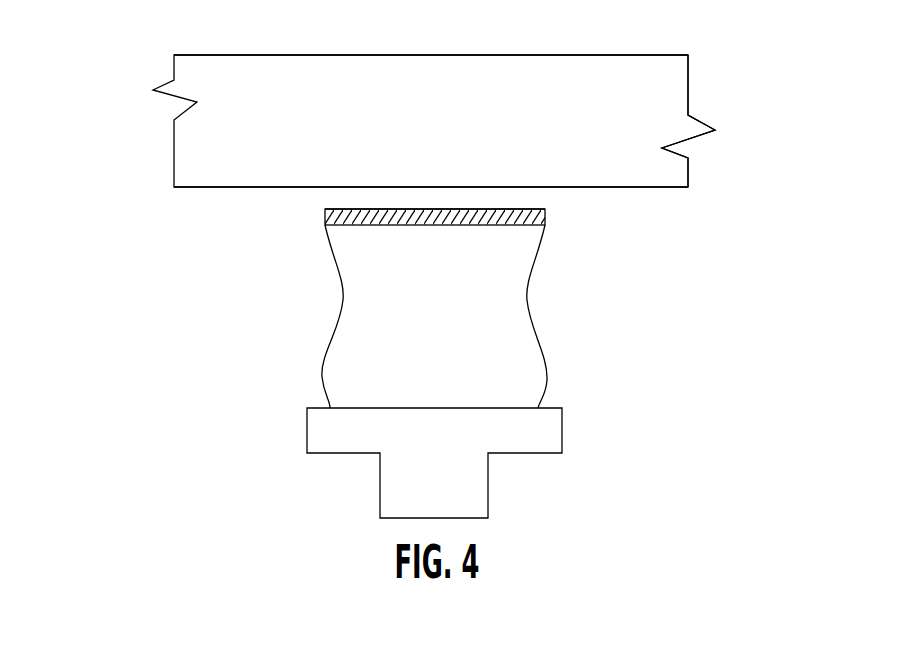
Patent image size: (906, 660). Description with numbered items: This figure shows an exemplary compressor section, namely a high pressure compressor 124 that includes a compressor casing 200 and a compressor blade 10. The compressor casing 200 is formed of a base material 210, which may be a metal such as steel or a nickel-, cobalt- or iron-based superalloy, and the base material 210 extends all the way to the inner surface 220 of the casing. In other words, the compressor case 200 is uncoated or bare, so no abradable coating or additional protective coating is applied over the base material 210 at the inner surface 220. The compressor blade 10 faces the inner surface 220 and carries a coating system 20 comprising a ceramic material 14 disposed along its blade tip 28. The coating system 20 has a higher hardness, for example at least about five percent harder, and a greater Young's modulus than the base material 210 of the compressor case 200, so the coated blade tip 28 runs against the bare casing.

The compressor blade 10 is at (638, 378).
The ceramic material 14 is at (545, 212).
The coating system 20 is at (569, 208).
The blade tip 28 is at (312, 225).
The high pressure compressor 124 is at (98, 150).
The compressor casing 200 is at (688, 92).
The base material 210 is at (642, 158).
The inner surface 220 is at (212, 196).